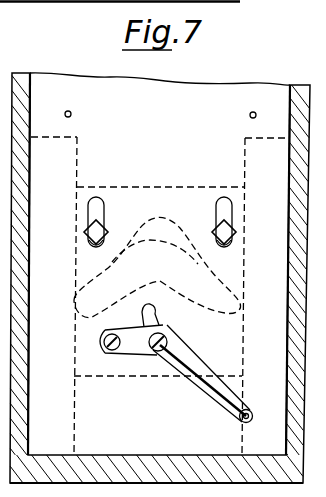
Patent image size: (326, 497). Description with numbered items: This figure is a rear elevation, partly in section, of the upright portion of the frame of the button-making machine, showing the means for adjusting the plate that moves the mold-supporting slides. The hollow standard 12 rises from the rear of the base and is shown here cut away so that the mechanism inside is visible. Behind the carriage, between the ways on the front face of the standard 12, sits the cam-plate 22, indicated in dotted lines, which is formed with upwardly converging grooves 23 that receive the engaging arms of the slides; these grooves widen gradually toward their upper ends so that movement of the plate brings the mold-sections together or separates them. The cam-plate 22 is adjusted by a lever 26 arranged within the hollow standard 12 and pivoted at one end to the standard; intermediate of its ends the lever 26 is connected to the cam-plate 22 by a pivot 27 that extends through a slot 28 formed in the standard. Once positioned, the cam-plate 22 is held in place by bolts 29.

The hollow upright or standard 12 is at (38, 457).
The cam-plate 22 is at (135, 189).
The upwardly converging grooves 23 is at (172, 223).
The lever 26 is at (221, 397).
The pivot 27 is at (154, 355).
The slot 28 is at (152, 312).
The bolts 29 is at (86, 232).